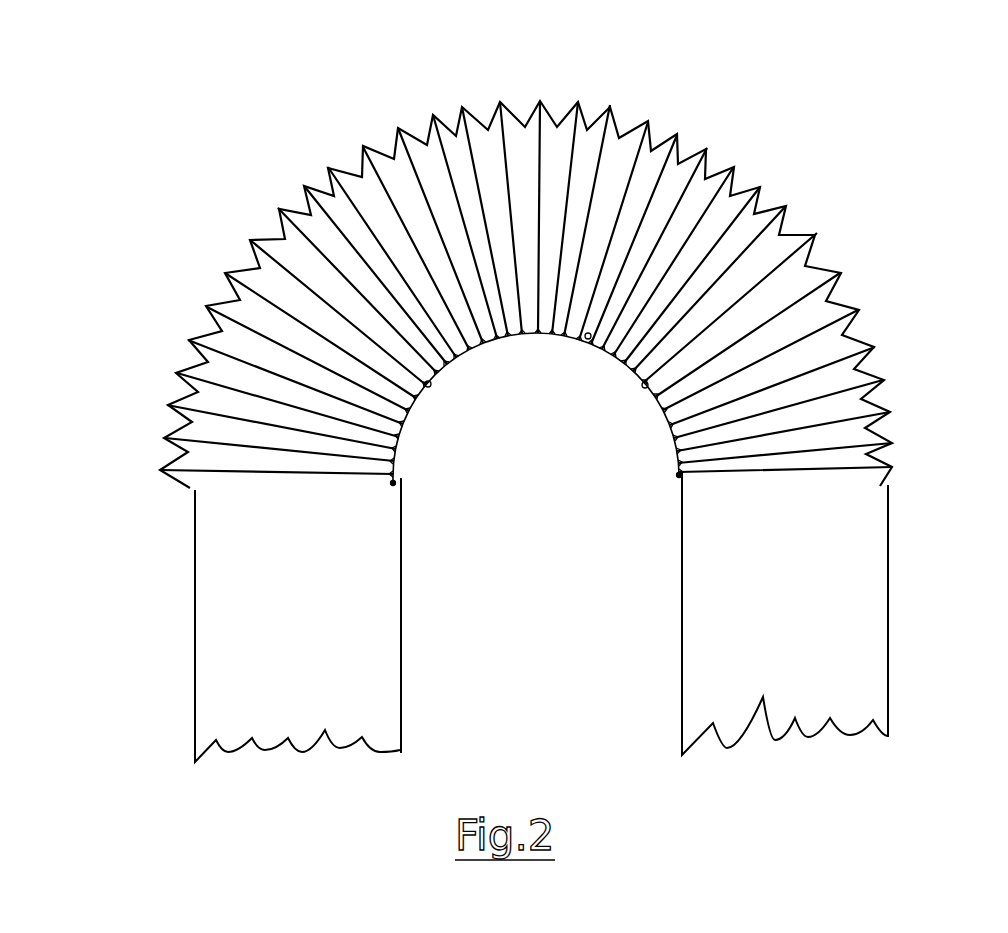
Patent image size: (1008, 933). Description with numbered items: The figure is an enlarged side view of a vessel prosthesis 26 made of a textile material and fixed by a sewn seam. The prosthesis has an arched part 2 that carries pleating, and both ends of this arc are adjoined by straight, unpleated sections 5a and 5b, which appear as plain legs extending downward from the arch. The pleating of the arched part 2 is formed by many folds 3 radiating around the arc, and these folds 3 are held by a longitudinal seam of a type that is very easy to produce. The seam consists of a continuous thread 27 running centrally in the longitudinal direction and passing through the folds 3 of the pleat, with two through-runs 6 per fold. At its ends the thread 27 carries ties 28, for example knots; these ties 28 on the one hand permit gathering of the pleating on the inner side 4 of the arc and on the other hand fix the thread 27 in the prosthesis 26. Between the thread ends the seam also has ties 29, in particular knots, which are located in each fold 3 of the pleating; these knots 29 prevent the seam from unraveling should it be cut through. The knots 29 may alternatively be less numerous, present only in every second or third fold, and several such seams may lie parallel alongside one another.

The vessel prosthesis 26 is at (529, 255).
The arched part 2 is at (740, 168).
The folds 3 is at (798, 278).
The inner side of the arc 4 is at (535, 350).
The through-runs 6 is at (594, 342).
The ties 29 is at (428, 384).
The continuous thread 27 is at (645, 385).
The ties 28 is at (396, 483).
The straight, unpleated section 5a is at (181, 670).
The straight, unpleated section 5b is at (671, 693).